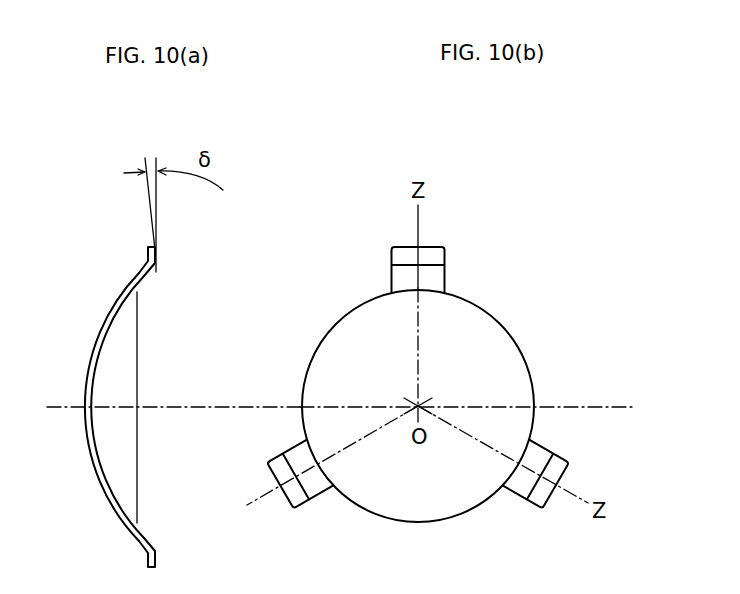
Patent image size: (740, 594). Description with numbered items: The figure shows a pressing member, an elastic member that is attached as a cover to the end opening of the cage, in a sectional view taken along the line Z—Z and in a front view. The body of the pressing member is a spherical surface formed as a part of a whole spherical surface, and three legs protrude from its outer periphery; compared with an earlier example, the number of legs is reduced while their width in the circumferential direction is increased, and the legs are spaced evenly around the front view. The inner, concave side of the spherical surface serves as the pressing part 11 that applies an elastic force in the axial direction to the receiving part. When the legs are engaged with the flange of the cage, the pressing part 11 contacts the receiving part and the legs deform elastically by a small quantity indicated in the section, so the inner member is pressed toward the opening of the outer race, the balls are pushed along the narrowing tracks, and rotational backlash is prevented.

The pressing part 11 is at (95, 388).